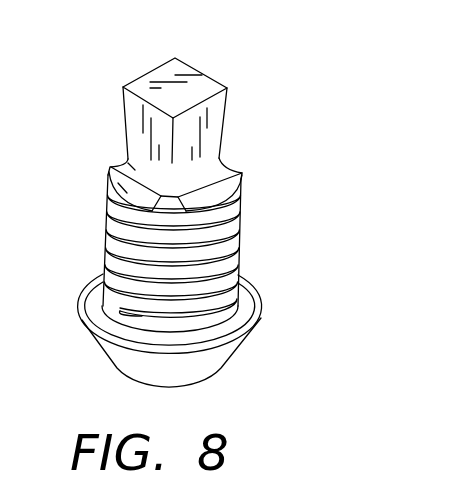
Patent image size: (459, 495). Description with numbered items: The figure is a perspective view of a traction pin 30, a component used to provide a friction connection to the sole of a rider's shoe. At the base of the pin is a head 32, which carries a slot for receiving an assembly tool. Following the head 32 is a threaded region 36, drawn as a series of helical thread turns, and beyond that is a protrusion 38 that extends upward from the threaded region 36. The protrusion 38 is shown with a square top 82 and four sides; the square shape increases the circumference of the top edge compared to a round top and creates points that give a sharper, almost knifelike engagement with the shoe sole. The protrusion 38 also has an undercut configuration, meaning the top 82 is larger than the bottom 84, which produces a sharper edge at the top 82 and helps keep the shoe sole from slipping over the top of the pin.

The traction pin 30 is at (253, 48).
The head 32 is at (203, 366).
The threaded region 36 is at (112, 233).
The protrusion 38 is at (191, 91).
The top 82 is at (168, 72).
The bottom 84 is at (123, 163).